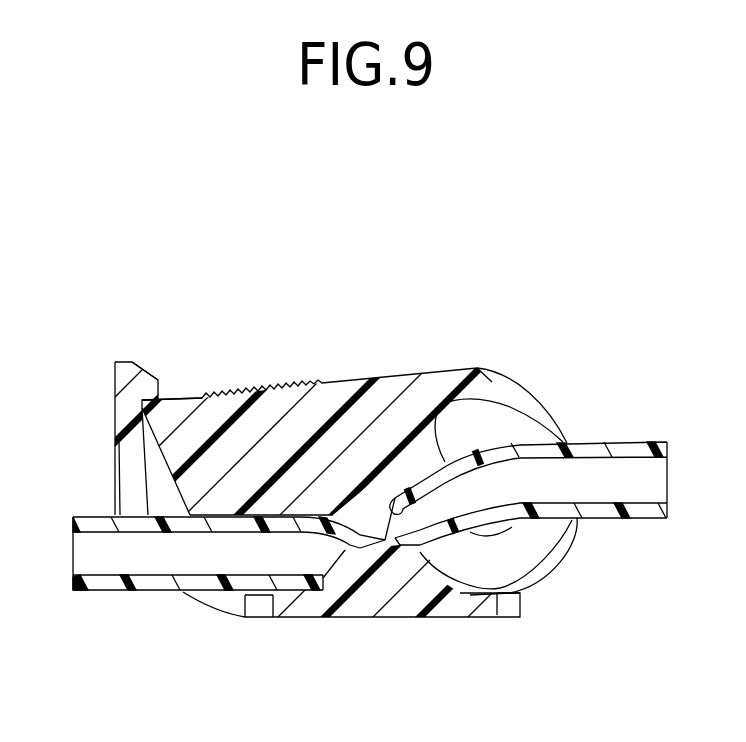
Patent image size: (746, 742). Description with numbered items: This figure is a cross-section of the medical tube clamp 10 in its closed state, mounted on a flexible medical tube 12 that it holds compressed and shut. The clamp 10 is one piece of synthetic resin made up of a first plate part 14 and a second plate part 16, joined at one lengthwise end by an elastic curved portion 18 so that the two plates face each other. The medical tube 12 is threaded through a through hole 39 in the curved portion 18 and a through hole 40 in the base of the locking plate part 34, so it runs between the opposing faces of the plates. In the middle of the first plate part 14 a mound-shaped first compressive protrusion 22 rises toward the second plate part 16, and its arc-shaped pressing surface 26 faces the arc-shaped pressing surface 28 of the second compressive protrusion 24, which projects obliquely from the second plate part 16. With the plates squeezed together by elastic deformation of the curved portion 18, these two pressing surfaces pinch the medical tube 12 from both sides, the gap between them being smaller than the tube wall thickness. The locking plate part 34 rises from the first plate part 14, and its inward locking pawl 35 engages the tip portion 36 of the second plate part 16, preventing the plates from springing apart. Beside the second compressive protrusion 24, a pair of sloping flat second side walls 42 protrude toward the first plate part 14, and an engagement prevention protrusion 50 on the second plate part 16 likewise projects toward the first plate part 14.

The medical tube clamp 10 is at (567, 318).
The medical tube 12 is at (617, 430).
The first plate part 14 is at (455, 603).
The second plate part 16 is at (355, 390).
The curved portion 18 is at (560, 548).
The first compressive protrusion 22 is at (352, 549).
The second compressive protrusion 24 is at (400, 514).
The pressing surface 26 is at (395, 545).
The pressing surface 28 is at (378, 545).
The locking plate part 34 is at (138, 484).
The locking pawl 35 is at (142, 396).
The tip portion 36 is at (173, 410).
The through hole 39 is at (503, 598).
The through hole 40 is at (130, 443).
The second side wall 42 is at (495, 532).
The engagement prevention protrusion 50 is at (205, 503).